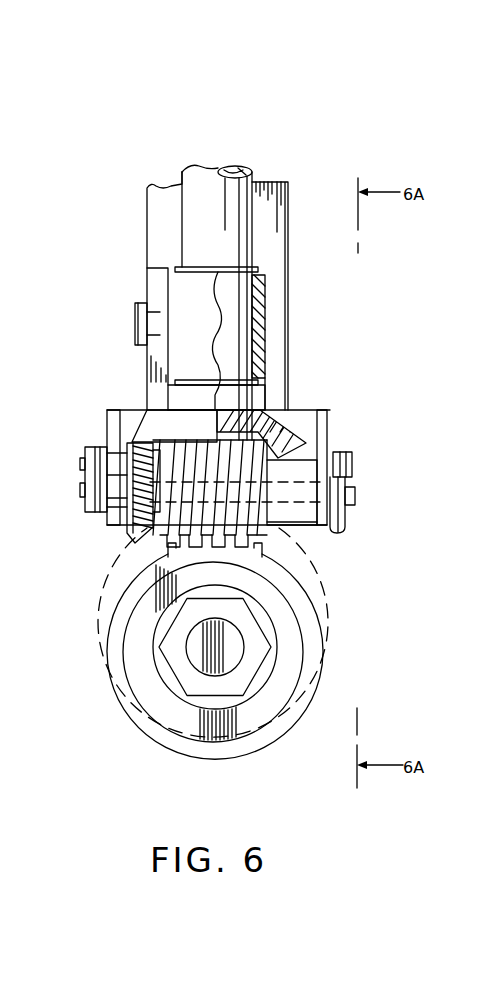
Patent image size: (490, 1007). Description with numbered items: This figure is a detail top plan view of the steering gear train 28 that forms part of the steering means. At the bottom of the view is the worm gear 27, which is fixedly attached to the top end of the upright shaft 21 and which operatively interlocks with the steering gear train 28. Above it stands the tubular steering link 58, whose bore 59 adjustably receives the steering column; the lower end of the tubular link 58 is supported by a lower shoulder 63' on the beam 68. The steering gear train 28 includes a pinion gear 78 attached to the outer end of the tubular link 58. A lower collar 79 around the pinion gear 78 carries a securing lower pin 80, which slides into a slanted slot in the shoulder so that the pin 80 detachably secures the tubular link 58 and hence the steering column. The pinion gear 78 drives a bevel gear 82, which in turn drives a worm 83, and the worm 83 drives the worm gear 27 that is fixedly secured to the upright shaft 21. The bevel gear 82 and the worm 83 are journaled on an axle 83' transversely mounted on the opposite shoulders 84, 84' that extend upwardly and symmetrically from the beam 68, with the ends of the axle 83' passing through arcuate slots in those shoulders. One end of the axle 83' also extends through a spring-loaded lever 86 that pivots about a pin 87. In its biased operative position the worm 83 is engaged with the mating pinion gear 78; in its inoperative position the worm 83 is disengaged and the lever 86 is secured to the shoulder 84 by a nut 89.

The upright shaft 21 is at (222, 645).
The worm gear 27 is at (147, 693).
The steering gear train 28 is at (318, 390).
The tubular steering link 58 is at (190, 207).
The bore 59 is at (248, 166).
The lower shoulder 63' is at (120, 291).
The beam 68 is at (273, 258).
The pinion gear 78 is at (303, 463).
The lower collar 79 is at (262, 315).
The securing lower pin 80 is at (135, 314).
The bevel gear 82 is at (127, 535).
The worm 83 is at (259, 517).
The axle 83' is at (400, 493).
The shoulder 84 is at (281, 447).
The shoulder 84' is at (84, 443).
The spring-loaded lever 86 is at (343, 532).
The pin 87 is at (122, 460).
The nut 89 is at (350, 512).